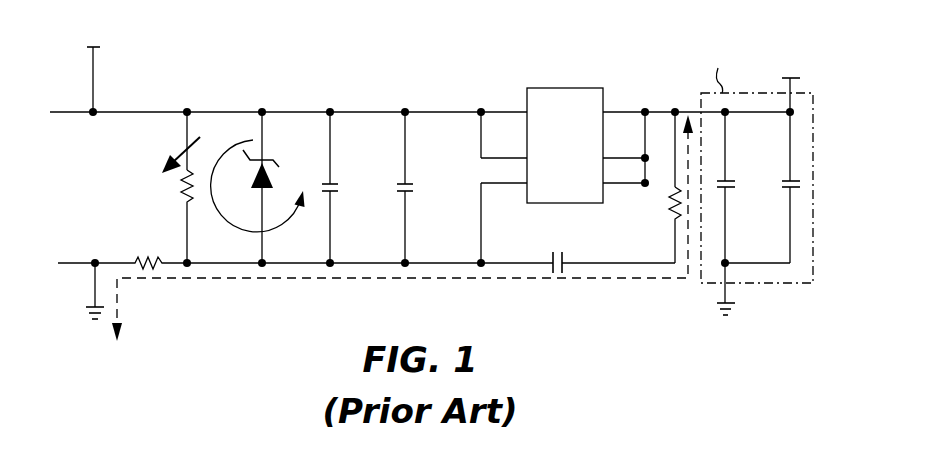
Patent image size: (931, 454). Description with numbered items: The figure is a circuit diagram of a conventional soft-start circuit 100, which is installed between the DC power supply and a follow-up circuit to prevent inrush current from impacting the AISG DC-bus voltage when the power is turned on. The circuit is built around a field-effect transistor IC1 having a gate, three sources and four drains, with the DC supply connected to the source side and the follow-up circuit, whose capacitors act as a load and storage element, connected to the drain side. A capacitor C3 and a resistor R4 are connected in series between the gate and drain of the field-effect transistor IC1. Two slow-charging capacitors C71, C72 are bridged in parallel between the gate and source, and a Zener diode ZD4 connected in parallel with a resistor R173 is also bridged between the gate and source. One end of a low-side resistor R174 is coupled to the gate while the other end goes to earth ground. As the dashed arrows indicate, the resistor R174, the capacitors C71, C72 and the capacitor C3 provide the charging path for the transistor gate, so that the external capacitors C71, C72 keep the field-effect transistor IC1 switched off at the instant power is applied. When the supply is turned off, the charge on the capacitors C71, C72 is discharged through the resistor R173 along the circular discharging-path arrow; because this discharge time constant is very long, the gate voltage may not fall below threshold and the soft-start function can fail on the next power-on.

The prior art circuit 100 is at (366, 80).
The resistor R173 is at (167, 187).
The resistor R174 is at (148, 254).
The Zener diode ZD4 is at (272, 187).
The slow-charging capacitor C71 is at (354, 187).
The slow-charging capacitor C72 is at (429, 187).
The slow-charging capacitor C3 is at (557, 266).
The field-effect transistor IC1 is at (564, 136).
The resistor R4 is at (664, 187).